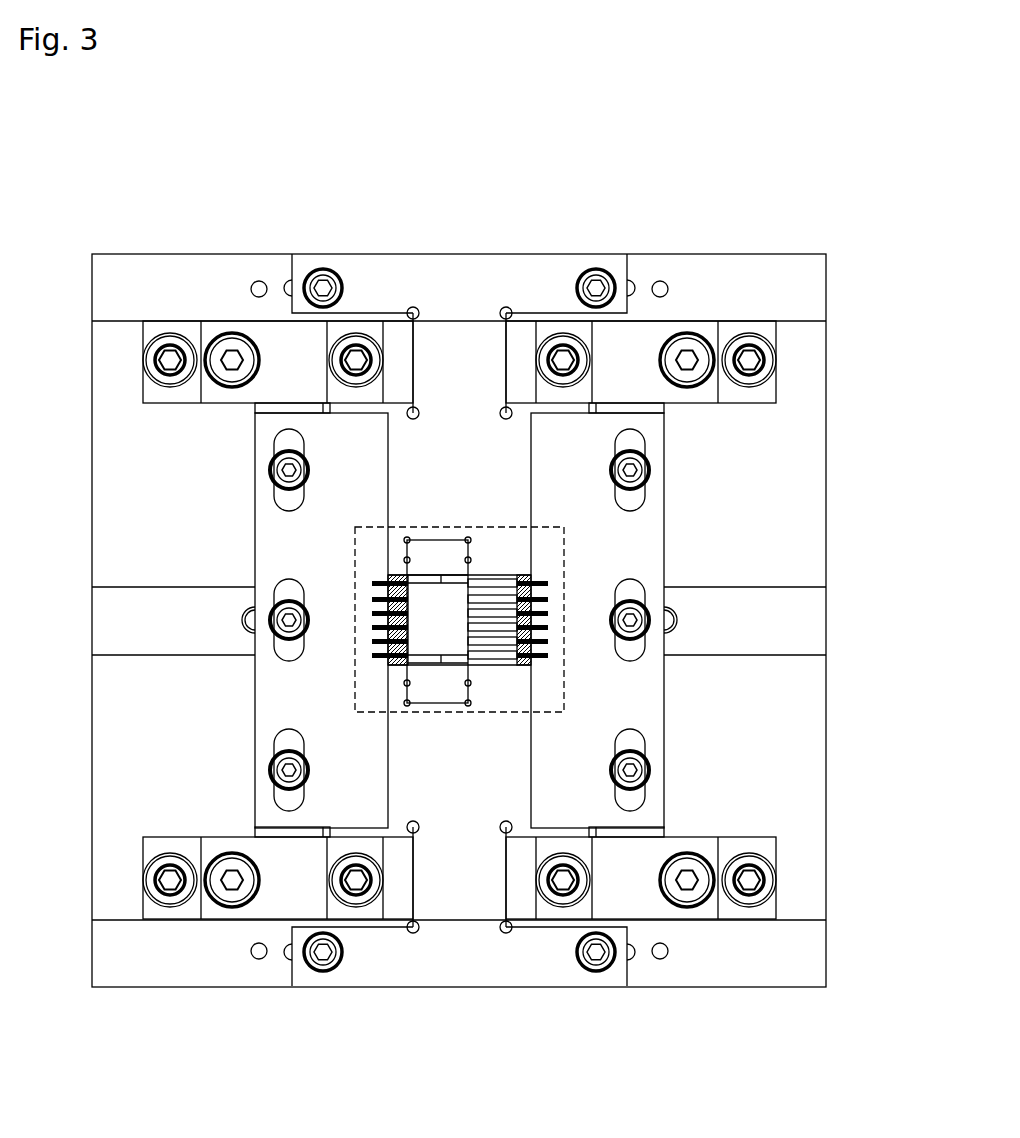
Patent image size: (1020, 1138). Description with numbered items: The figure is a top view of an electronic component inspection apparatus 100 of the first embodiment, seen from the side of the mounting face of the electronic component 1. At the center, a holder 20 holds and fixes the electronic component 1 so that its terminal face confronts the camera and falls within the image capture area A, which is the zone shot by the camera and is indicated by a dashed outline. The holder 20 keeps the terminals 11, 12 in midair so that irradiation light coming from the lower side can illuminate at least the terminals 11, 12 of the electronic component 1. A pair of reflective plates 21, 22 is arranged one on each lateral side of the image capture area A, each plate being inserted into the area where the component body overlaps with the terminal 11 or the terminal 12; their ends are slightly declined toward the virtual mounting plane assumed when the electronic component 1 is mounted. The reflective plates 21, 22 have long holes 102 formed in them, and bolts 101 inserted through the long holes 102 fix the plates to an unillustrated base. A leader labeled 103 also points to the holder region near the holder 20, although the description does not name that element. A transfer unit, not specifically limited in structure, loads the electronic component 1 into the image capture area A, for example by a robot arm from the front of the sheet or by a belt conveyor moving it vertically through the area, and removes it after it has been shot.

The inspection apparatus 100 is at (700, 113).
The electronic component 1 is at (487, 677).
The terminal 11 is at (372, 583).
The terminal 12 is at (547, 583).
The holder 20 is at (415, 535).
The reflective plate 21 is at (285, 703).
The reflective plate 22 is at (633, 702).
The bolt 101 is at (643, 472).
The long hole 102 is at (633, 445).
The holding portion 103 is at (441, 537).
The image capture area A is at (455, 713).